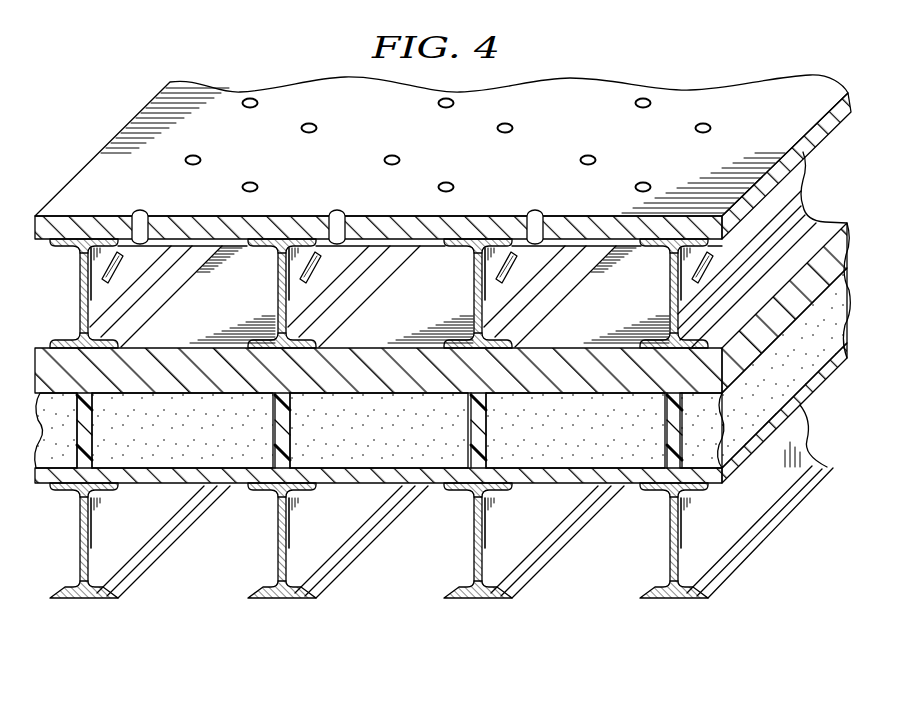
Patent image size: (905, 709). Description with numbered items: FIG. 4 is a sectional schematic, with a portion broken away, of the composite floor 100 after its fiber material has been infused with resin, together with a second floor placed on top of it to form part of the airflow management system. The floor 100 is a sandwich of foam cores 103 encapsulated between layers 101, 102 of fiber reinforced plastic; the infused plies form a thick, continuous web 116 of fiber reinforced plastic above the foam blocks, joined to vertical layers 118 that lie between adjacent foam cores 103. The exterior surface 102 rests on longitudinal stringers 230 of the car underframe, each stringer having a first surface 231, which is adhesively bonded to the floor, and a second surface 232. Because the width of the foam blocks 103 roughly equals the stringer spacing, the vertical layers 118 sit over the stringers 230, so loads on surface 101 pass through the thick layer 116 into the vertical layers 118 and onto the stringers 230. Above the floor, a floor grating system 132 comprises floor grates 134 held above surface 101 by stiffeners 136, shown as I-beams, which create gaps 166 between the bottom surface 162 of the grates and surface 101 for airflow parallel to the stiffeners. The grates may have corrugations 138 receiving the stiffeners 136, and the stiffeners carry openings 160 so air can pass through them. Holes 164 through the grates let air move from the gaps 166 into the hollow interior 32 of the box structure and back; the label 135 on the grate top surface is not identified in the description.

The hollow interior 32 is at (136, 75).
The floor 100 is at (259, 626).
The surface of floor 101 is at (227, 320).
The exterior surface of floor 102 is at (403, 487).
The foam cores 103 is at (45, 414).
The thick layer of fiber reinforced plastic 116 is at (597, 371).
The vertical layers of fiber reinforced plastic 118 is at (78, 420).
The floor grating system 132 is at (443, 160).
The floor grates 134 is at (50, 243).
The upper surface of top plate 135 is at (530, 182).
The stiffeners 136 is at (477, 309).
The corrugations 138 is at (440, 238).
The openings 160 is at (312, 267).
The bottom surface of floor grates 162 is at (375, 216).
The holes 164 is at (141, 212).
The gaps 166 is at (226, 278).
The longitudinal stringers 230 is at (110, 540).
The first surface of stringer 231 is at (93, 478).
The second surface of stringer 232 is at (83, 600).